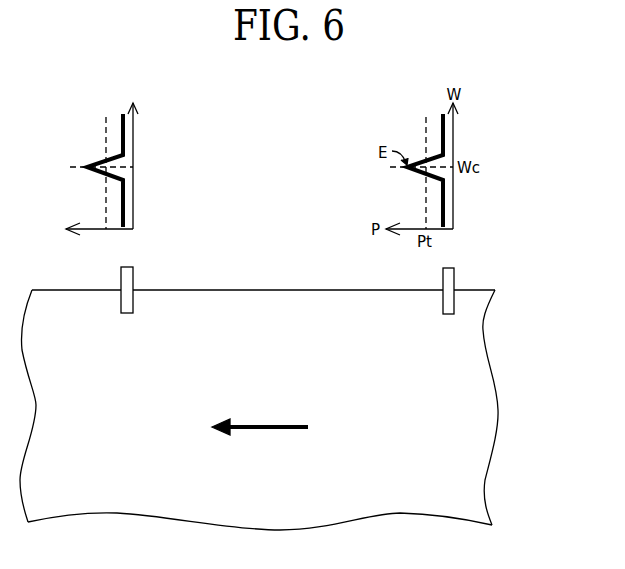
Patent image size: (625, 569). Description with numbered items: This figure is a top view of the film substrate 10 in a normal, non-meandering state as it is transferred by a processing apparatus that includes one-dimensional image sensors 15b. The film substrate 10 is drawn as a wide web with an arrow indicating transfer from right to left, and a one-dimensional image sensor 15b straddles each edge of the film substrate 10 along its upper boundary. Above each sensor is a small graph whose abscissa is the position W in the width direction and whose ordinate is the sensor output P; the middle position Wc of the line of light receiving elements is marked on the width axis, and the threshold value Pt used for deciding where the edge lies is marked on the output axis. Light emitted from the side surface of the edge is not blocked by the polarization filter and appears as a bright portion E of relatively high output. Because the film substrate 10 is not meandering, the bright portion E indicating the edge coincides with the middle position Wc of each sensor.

The film substrate 10 is at (488, 411).
The one-dimensional image sensor 15b is at (132, 280).
The position in the width direction W is at (134, 157).
The middle position of the sensor Wc is at (115, 168).
The bright portion E is at (86, 163).
The sensor output P is at (92, 230).
The threshold value Pt is at (104, 184).